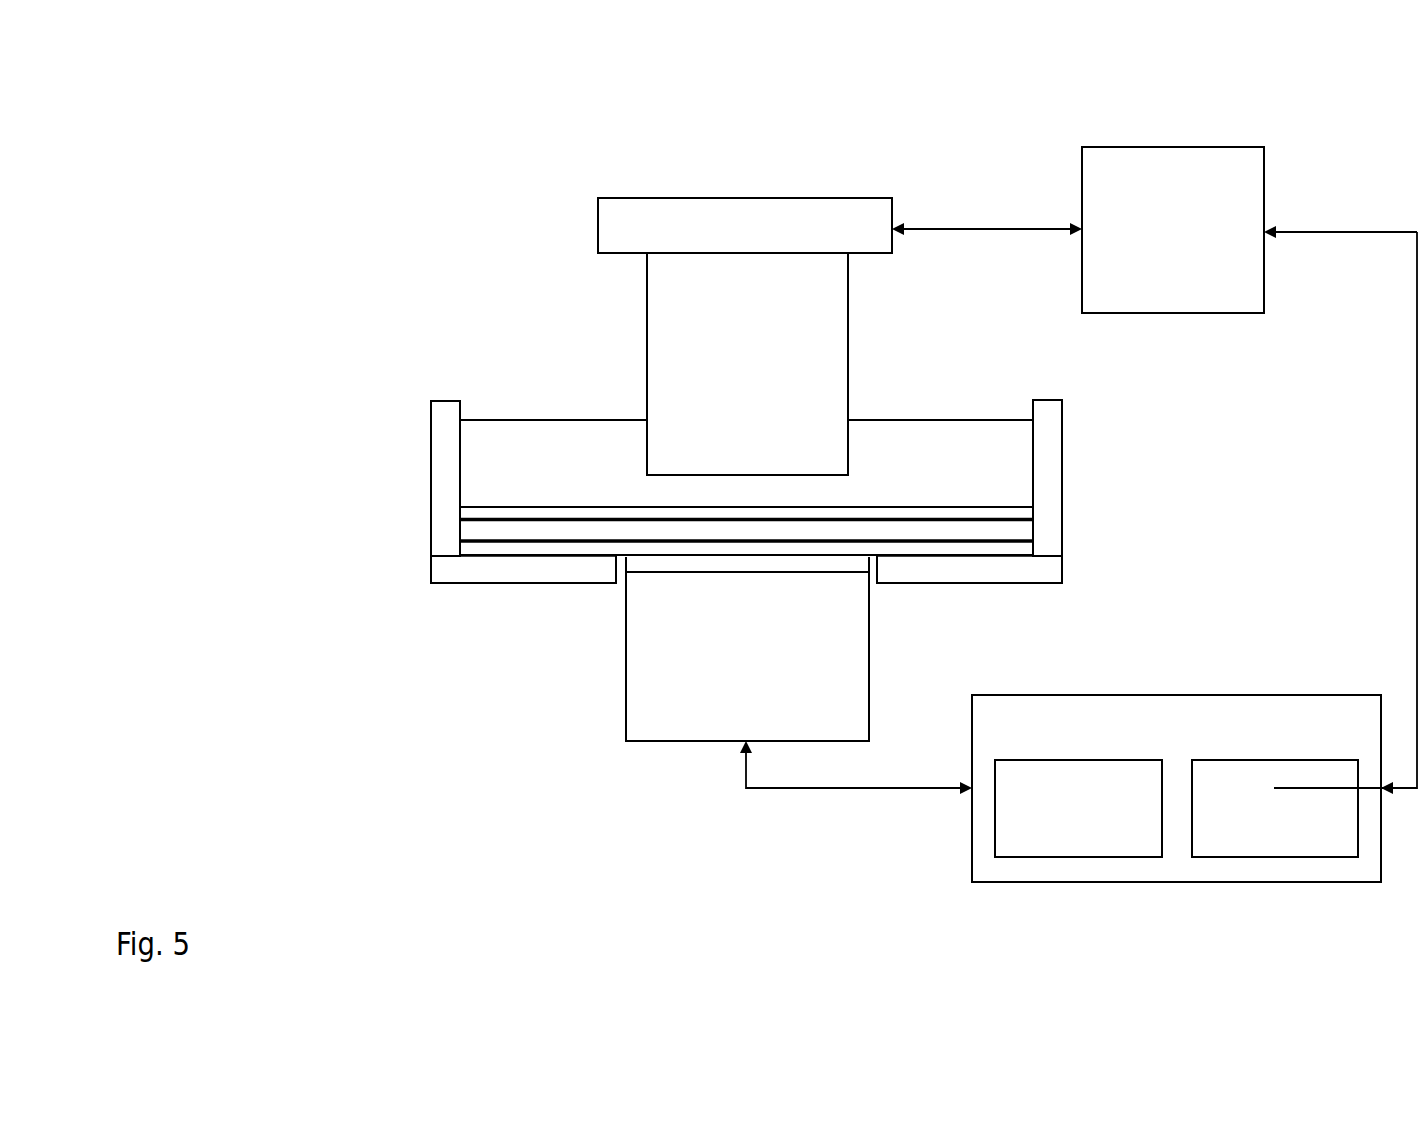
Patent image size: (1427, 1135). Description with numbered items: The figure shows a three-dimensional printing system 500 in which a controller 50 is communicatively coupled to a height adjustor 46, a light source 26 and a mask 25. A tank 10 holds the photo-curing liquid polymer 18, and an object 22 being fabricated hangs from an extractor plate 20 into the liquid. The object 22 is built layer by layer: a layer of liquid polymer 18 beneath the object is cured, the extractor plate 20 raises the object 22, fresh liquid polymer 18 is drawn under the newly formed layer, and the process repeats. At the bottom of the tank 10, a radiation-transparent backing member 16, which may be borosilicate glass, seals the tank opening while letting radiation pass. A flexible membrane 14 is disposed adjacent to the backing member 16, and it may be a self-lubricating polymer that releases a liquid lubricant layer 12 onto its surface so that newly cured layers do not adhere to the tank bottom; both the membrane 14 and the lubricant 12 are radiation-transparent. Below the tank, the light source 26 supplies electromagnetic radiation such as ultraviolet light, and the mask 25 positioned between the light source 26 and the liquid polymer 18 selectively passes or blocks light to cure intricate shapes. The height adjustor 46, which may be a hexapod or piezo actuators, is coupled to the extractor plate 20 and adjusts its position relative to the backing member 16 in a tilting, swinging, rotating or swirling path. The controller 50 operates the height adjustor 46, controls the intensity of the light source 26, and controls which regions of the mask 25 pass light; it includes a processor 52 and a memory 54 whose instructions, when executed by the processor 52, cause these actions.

The 3D printing system 500 is at (260, 79).
The tank 10 is at (440, 426).
The liquid lubricant layer 12 is at (462, 512).
The flexible membrane 14 is at (462, 537).
The backing member 16 is at (462, 553).
The photo-curing liquid polymer 18 is at (992, 475).
The extractor plate 20 is at (760, 242).
The object 22 is at (760, 378).
The mask 25 is at (661, 563).
The light source 26 is at (761, 675).
The height adjustor 46 is at (1187, 278).
The controller 50 is at (1252, 743).
The processor 52 is at (1092, 840).
The memory 54 is at (1288, 840).